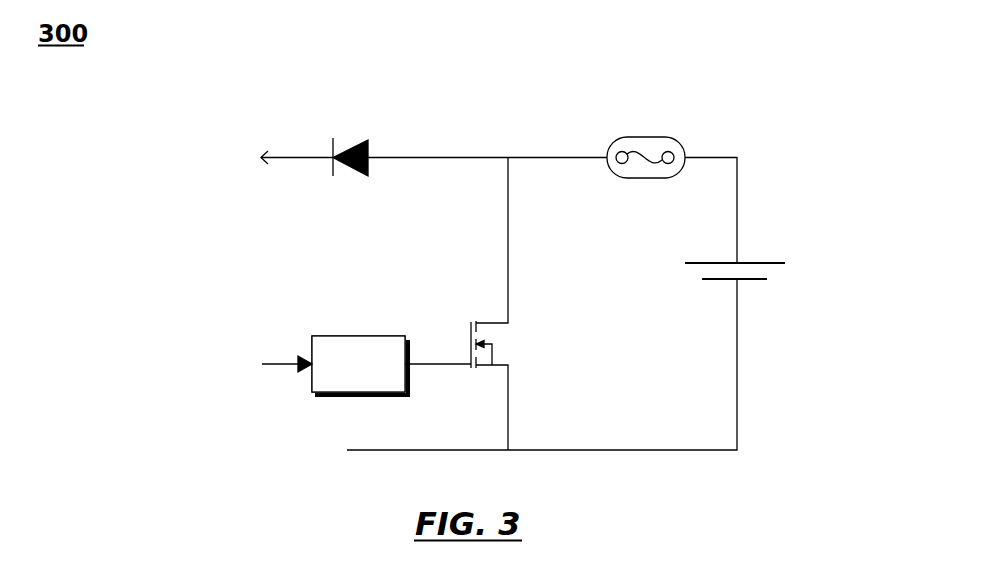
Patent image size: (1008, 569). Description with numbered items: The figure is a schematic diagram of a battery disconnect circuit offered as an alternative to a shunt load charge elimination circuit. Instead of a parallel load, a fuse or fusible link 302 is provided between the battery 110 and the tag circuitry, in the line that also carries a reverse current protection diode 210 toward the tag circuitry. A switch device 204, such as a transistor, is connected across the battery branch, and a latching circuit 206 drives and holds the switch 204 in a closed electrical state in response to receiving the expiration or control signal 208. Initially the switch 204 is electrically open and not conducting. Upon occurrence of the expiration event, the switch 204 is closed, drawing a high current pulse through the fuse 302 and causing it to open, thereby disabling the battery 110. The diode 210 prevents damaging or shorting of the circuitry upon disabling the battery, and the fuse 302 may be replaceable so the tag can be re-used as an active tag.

The diode 210 is at (363, 140).
The fuse 302 is at (648, 137).
The battery 110 is at (767, 263).
The latching circuit 206 is at (368, 336).
The control signal 208 is at (278, 363).
The switch device 204 is at (492, 353).